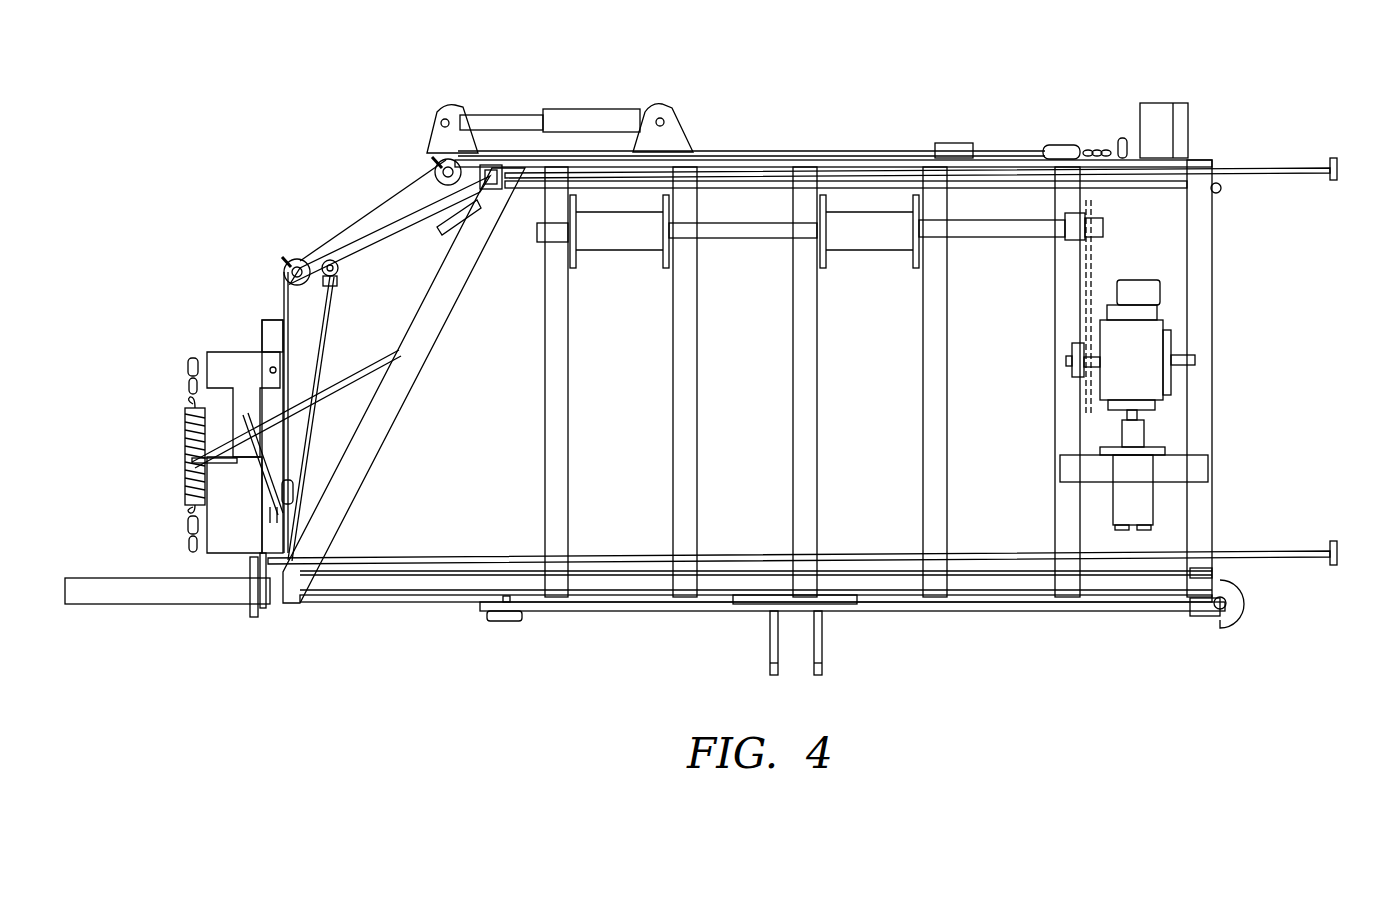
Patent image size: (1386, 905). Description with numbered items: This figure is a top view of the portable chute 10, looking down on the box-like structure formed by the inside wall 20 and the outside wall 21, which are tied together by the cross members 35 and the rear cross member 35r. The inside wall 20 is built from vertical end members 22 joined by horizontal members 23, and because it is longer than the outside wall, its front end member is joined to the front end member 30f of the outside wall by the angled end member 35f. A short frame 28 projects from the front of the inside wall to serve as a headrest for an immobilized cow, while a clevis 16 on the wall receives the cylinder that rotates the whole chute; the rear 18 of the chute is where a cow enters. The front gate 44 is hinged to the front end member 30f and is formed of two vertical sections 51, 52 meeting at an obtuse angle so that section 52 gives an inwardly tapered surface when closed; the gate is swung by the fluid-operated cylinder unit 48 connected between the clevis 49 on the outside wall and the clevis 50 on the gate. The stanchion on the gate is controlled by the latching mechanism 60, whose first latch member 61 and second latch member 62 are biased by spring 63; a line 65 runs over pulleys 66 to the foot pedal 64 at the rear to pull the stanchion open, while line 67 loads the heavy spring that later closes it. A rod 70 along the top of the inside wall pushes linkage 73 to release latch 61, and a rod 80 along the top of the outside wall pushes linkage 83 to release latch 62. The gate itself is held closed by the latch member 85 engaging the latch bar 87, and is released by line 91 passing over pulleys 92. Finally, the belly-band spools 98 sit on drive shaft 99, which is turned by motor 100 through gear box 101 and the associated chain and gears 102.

The portable chute 10 is at (905, 90).
The clevis 16 is at (826, 640).
The rear of the chute 18 is at (1325, 312).
The inside wall 20 is at (410, 622).
The outside wall 21 is at (1015, 130).
The vertical end members 22 is at (270, 610).
The horizontal members 23 is at (1003, 592).
The short frame 28 is at (115, 606).
The front end member 30f is at (492, 190).
The cross members 35 is at (568, 456).
The angled end member 35f is at (388, 428).
The rear cross member 35r is at (1213, 230).
The front gate 44 is at (255, 302).
The fluid-operated cylinder unit 48 is at (578, 107).
The clevis 49 is at (680, 126).
The clevis 50 is at (442, 110).
The vertical section 51 is at (260, 335).
The vertical section 52 is at (366, 283).
The latching mechanism 60 is at (175, 430).
The first latch member 61 is at (207, 354).
The second latch member 62 is at (194, 548).
The spring 63 is at (184, 486).
The foot pedal 64 is at (1160, 103).
The line 65 is at (822, 150).
The pulleys 66 is at (434, 167).
The line 67 is at (334, 366).
The rod 70 is at (985, 551).
The linkage 73 is at (264, 526).
The rod 80 is at (1265, 166).
The linkage 83 is at (330, 392).
The latch member 85 is at (342, 604).
The latch bar 87 is at (248, 622).
The line 91 is at (640, 612).
The pulleys 92 is at (500, 622).
The spool 98 is at (618, 258).
The drive shaft 99 is at (737, 240).
The motor 100 is at (1150, 527).
The gear box 101 is at (1155, 343).
The chain and gears 102 is at (1094, 256).